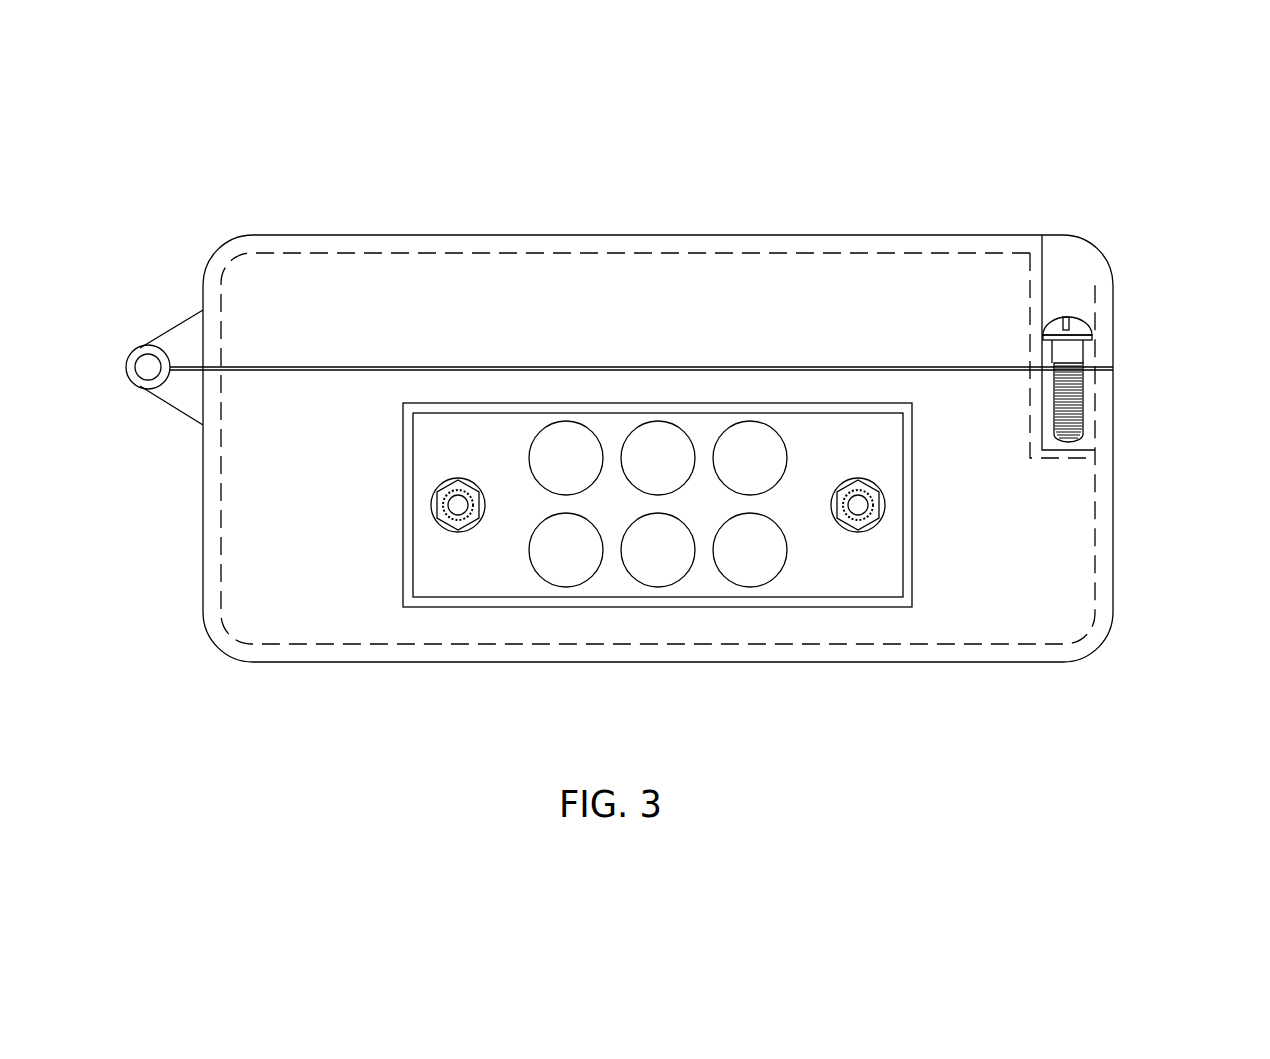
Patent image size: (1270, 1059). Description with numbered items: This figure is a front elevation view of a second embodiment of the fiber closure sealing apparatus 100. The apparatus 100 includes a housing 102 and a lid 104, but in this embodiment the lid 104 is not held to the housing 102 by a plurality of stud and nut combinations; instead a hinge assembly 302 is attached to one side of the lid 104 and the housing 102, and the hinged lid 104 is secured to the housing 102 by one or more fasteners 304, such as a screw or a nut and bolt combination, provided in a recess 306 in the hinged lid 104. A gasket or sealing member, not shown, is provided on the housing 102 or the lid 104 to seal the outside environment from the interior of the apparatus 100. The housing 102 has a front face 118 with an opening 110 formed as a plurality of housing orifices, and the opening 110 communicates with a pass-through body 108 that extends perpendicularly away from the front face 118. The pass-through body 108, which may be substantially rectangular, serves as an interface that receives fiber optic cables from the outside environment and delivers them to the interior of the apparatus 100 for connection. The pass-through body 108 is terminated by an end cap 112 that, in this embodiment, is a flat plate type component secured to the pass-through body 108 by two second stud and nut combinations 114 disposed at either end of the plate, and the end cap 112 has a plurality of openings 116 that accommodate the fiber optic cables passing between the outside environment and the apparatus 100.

The fiber closure sealing apparatus 100 is at (485, 145).
The housing 102 is at (236, 548).
The lid 104 is at (720, 270).
The pass-through body 108 is at (503, 598).
The opening 110 is at (917, 503).
The end cap 112 is at (860, 587).
The second stud and nut combinations 114 is at (433, 510).
The openings 116 is at (660, 587).
The front face 118 is at (1082, 510).
The hinge assembly 302 is at (143, 347).
The fasteners 304 is at (1077, 363).
The recess 306 is at (1068, 278).